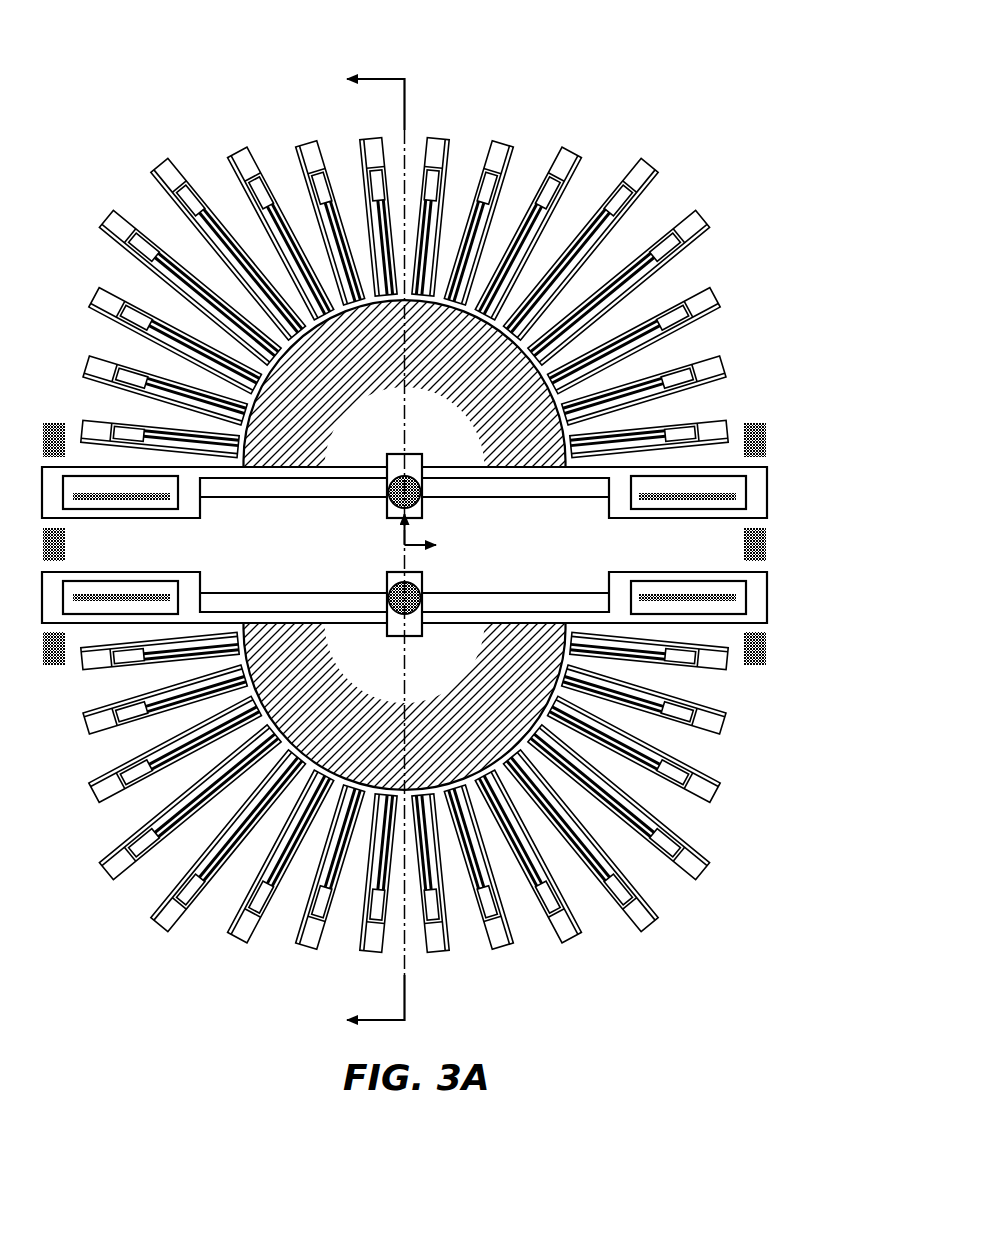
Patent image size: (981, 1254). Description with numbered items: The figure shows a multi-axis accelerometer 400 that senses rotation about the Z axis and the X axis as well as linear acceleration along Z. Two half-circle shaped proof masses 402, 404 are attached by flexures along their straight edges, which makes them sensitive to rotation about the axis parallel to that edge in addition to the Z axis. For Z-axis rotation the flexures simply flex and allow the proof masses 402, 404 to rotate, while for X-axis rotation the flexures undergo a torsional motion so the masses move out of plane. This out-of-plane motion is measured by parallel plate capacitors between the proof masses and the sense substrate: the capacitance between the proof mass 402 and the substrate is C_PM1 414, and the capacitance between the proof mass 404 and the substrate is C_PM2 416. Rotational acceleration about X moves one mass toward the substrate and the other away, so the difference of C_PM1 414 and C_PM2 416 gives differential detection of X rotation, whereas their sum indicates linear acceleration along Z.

The vibratory gyroscope sensor 400 is at (170, 48).
The proof mass 402 is at (452, 433).
The proof mass 404 is at (413, 690).
The capacitance C_PM1 414 is at (680, 218).
The capacitance C_PM2 416 is at (316, 722).